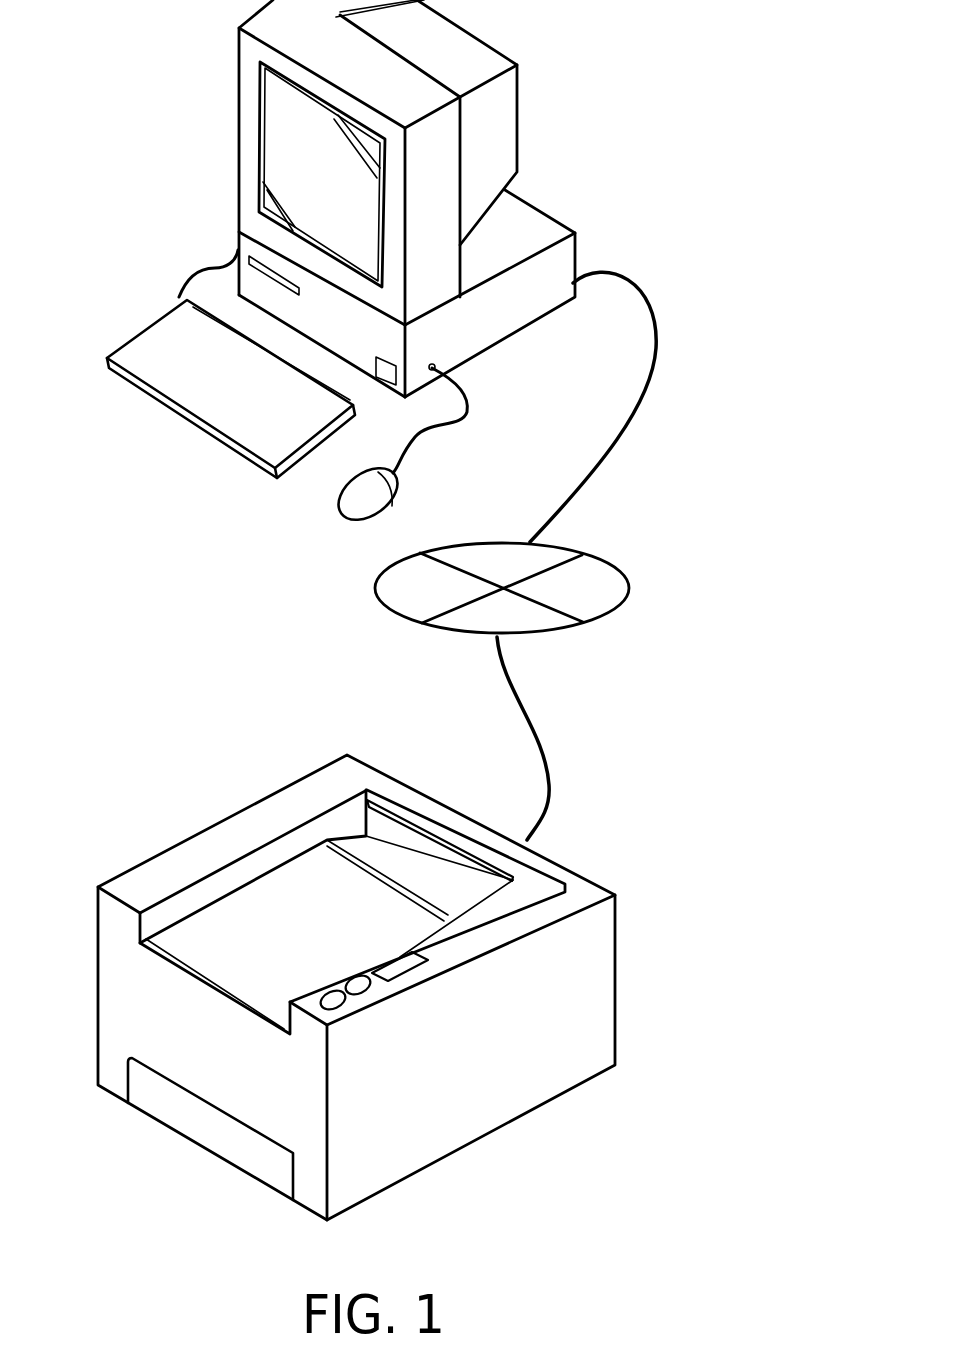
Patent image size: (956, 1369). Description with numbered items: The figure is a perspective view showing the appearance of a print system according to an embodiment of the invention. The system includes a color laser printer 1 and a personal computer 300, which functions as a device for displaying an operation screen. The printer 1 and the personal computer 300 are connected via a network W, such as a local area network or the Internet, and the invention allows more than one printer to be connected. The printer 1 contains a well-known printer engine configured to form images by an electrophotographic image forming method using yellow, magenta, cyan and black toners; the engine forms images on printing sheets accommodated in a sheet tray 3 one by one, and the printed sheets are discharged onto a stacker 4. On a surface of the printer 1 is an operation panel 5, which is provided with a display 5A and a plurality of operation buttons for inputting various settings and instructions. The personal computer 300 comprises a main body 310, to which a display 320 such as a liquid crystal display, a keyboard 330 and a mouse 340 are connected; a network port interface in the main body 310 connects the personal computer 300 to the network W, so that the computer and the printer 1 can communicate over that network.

The personal computer 300 is at (547, 162).
The main body 310 is at (500, 318).
The display 320 is at (248, 97).
The keyboard 330 is at (165, 375).
The mouse 340 is at (347, 498).
The network W is at (613, 568).
The color laser printer 1 is at (633, 952).
The sheet tray 3 is at (178, 1117).
The stacker 4 is at (395, 868).
The operation panel 5 is at (352, 958).
The display 5A is at (407, 968).